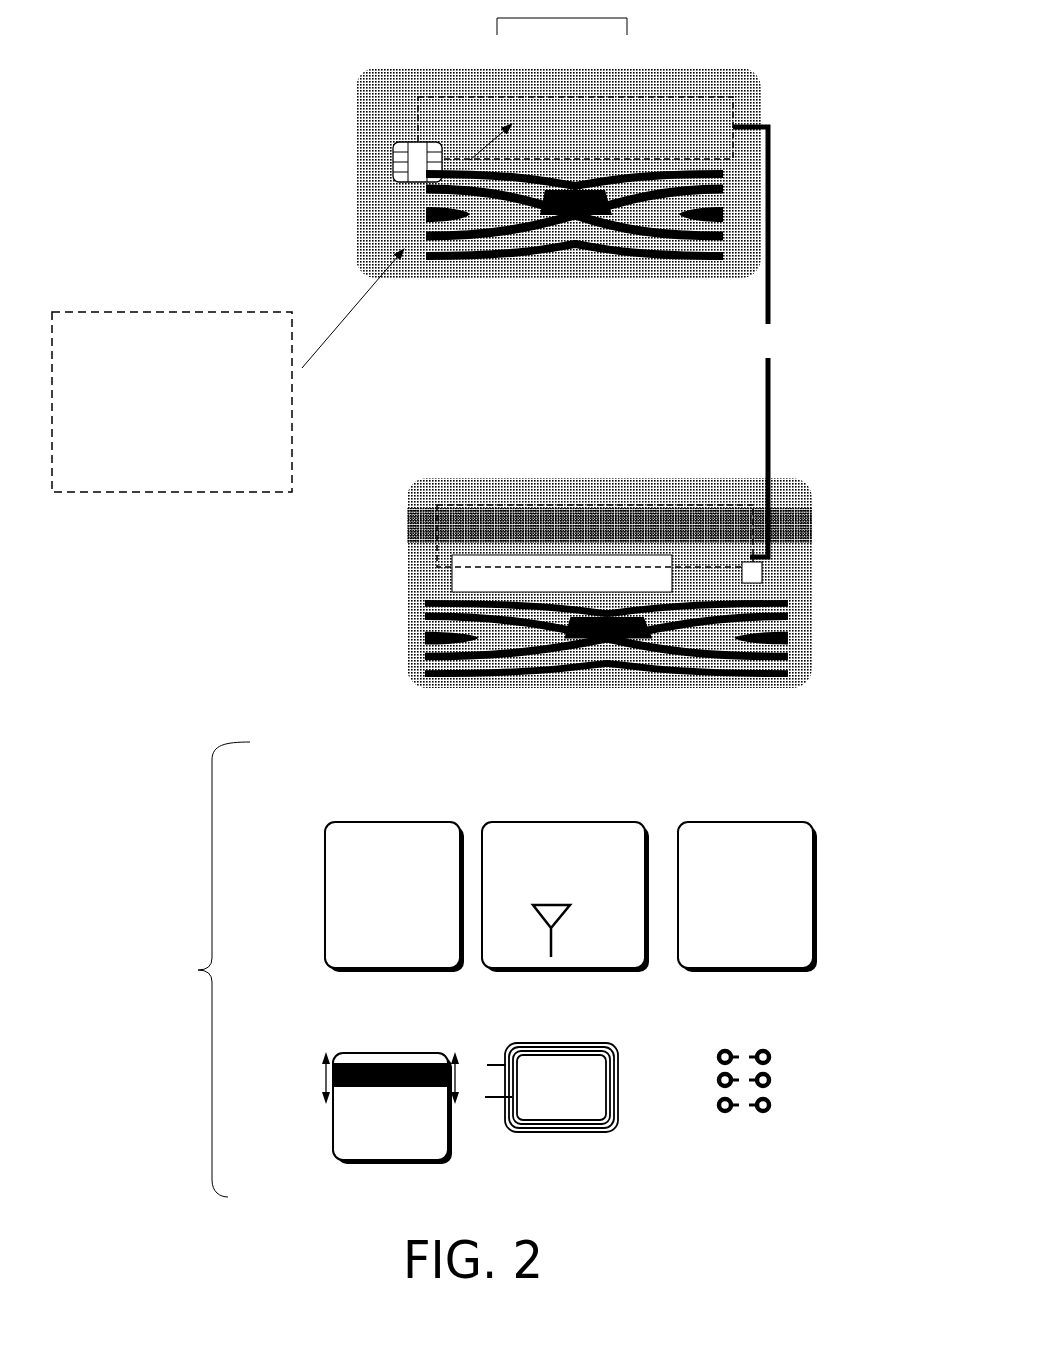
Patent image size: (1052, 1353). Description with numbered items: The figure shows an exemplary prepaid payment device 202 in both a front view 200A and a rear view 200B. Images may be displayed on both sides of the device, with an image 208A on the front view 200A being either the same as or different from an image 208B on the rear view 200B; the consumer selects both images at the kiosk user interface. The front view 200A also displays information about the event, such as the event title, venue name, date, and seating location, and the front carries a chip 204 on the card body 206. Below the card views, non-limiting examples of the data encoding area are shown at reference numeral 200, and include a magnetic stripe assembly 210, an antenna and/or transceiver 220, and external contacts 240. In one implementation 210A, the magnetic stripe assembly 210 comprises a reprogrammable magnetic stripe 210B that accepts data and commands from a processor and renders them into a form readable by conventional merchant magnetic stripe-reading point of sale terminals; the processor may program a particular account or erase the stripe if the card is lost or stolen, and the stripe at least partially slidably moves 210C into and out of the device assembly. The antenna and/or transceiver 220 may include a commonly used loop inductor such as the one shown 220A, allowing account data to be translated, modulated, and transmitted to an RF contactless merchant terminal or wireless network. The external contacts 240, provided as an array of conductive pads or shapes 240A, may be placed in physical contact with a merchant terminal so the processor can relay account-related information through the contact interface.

The data encoding area 200 is at (174, 969).
The front view 200A is at (727, 52).
The rear view 200B is at (489, 456).
The prepaid payment device 202 is at (346, 93).
The external contacts chip 204 is at (395, 170).
The card body 206 is at (425, 187).
The image 208A is at (475, 258).
The image 208B is at (543, 676).
The magnetic stripe assembly 210 is at (347, 822).
The magnetic stripe assembly implementation 210A is at (316, 1038).
The reprogrammable magnetic stripe 210B is at (358, 1065).
The slidable movement 210C is at (326, 1077).
The antenna and/or transceiver 220 is at (513, 822).
The loop inductor 220A is at (562, 1132).
The external contacts 240 is at (702, 822).
The array of conductive pads or shapes 240A is at (760, 1112).